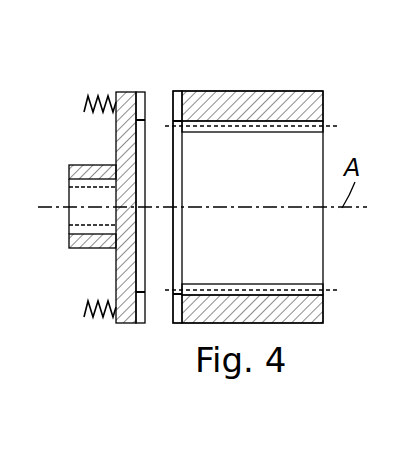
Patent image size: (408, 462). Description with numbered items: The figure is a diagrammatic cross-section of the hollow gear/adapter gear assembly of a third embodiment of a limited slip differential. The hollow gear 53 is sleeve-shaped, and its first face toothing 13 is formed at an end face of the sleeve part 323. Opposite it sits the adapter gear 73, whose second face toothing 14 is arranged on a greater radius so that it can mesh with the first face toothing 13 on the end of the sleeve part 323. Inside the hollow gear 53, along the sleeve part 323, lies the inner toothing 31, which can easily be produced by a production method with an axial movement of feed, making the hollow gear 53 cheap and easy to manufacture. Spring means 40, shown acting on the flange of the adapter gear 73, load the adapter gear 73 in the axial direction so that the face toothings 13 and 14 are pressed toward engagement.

The adapter gear 73 is at (100, 72).
The second face toothing 14 is at (139, 92).
The first face toothing 13 is at (176, 91).
The hollow gear 53 is at (252, 162).
The sleeve part 323 is at (285, 100).
The inner toothing 31 is at (268, 127).
The spring means 40 is at (90, 318).